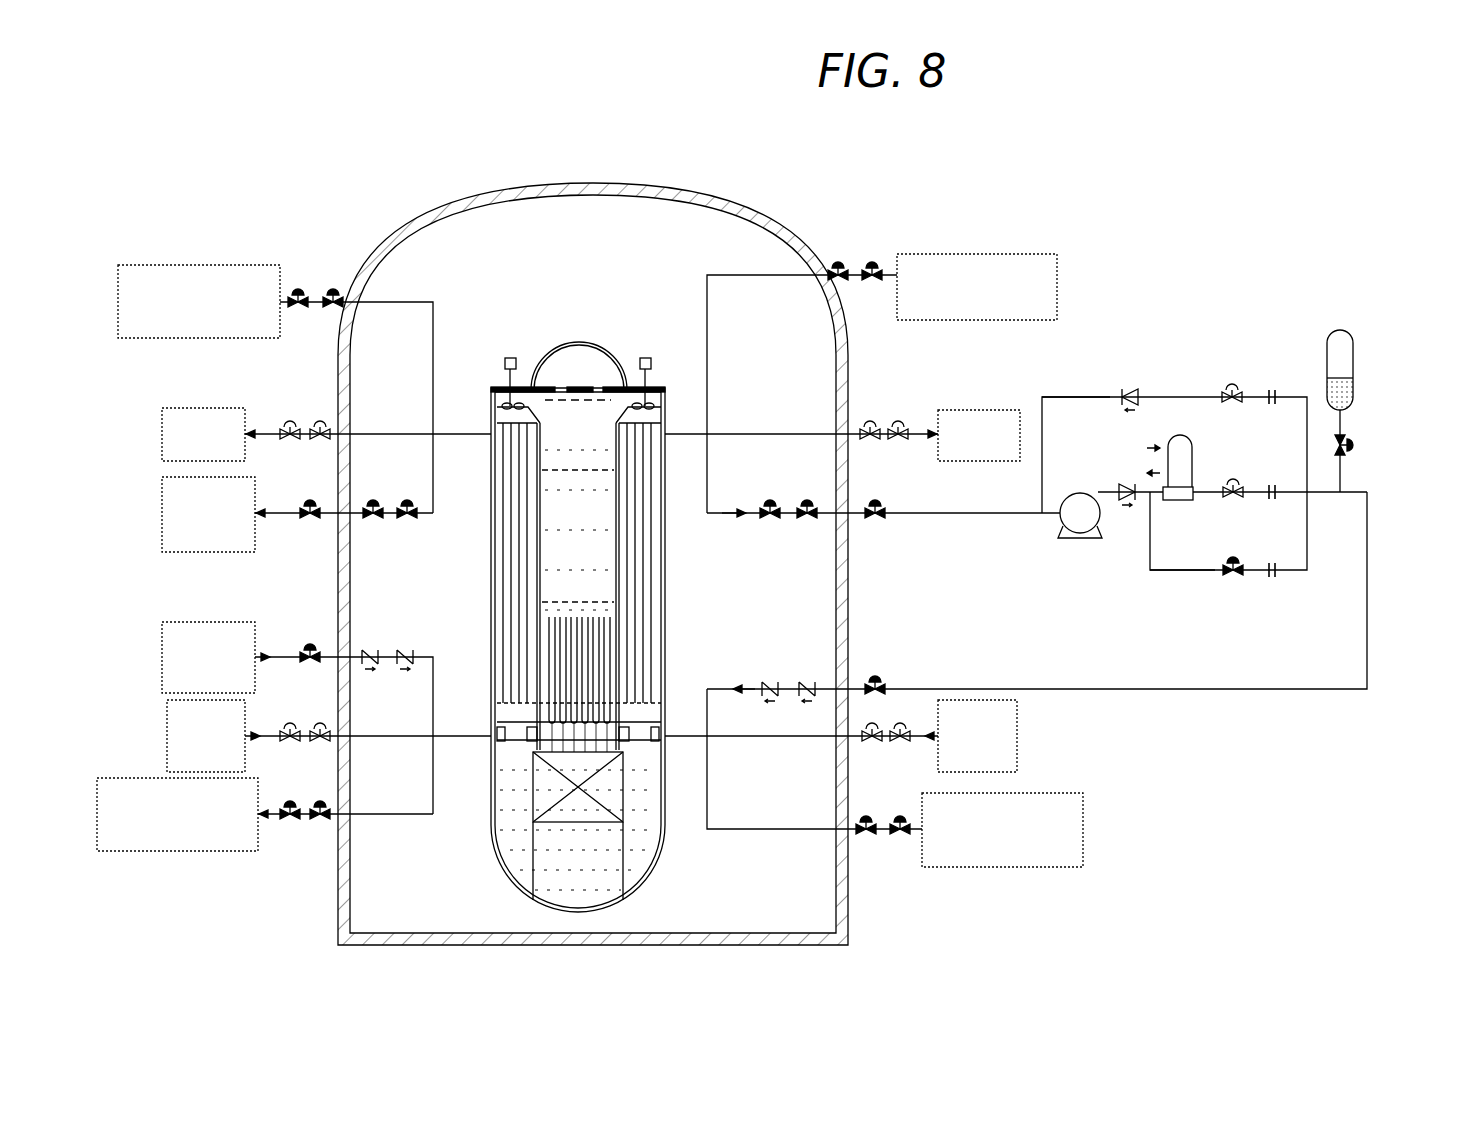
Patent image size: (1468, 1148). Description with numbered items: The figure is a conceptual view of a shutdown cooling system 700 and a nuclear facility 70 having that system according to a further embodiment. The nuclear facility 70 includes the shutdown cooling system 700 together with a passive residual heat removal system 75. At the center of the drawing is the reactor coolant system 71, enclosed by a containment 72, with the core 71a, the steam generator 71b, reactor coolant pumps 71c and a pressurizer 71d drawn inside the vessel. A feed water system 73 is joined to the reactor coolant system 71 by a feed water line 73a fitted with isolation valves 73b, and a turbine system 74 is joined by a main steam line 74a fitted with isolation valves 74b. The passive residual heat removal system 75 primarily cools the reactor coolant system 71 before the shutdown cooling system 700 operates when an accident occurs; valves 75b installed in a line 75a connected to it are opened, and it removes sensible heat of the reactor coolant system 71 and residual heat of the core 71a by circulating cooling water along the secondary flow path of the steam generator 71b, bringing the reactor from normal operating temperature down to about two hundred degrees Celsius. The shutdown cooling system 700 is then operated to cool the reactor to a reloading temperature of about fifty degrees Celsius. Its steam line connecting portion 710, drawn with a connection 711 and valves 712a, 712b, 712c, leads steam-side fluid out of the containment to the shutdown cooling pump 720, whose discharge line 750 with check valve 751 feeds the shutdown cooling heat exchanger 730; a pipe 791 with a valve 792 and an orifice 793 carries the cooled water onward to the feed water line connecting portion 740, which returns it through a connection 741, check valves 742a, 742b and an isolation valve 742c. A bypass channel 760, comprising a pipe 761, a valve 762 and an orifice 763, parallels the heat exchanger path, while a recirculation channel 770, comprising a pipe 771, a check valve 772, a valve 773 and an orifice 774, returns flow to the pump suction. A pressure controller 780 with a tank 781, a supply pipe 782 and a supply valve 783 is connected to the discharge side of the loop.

The nuclear facility 70 is at (292, 225).
The containment 72 is at (447, 212).
The reactor coolant system 71 is at (551, 604).
The core 71a is at (537, 805).
The steam generator 71b is at (505, 553).
The reactor coolant pump 71c is at (510, 357).
The pressurizer 71d is at (579, 352).
The feed water system 73 is at (165, 736).
The feed water line 73a is at (684, 742).
The feed water isolation valve 73b is at (879, 745).
The turbine system 74 is at (160, 434).
The main steam line 74a is at (681, 430).
The main steam isolation valve 74b is at (870, 420).
The passive residual heat removal system 75 is at (265, 839).
The line 75a is at (320, 822).
The valves 75b is at (289, 822).
The shutdown cooling system 700 is at (1325, 272).
The steam line connecting portion 710 is at (883, 550).
The injection nozzle 711 is at (730, 520).
The isolation valve 712a is at (770, 522).
The isolation valve 712b is at (807, 522).
The isolation valve 712c is at (882, 531).
The shutdown cooling pump 720 is at (1080, 535).
The shutdown cooling heat exchanger 730 is at (1195, 450).
The feed water line connecting portion 740 is at (1036, 597).
The return nozzle 741 is at (738, 685).
The check valve 742a is at (770, 680).
The check valve 742b is at (809, 680).
The isolation valve 742c is at (880, 666).
The discharge line 750 is at (1119, 495).
The check valve 751 is at (1127, 508).
The bypass channel 760 is at (1228, 578).
The bypass pipe 761 is at (1172, 572).
The isolation valve 762 is at (1232, 578).
The orifice 763 is at (1272, 593).
The recirculation channel 770 is at (1174, 398).
The recirculation pipe 771 is at (1083, 395).
The check valve 772 is at (1128, 388).
The control valve 773 is at (1232, 384).
The orifice 774 is at (1272, 365).
The pressure controller 780 is at (1395, 411).
The gas tank 781 is at (1355, 352).
The supply pipe 782 is at (1342, 418).
The supply valve 783 is at (1374, 441).
The connection pipe 791 is at (1208, 498).
The control valve 792 is at (1238, 500).
The orifice 793 is at (1275, 500).